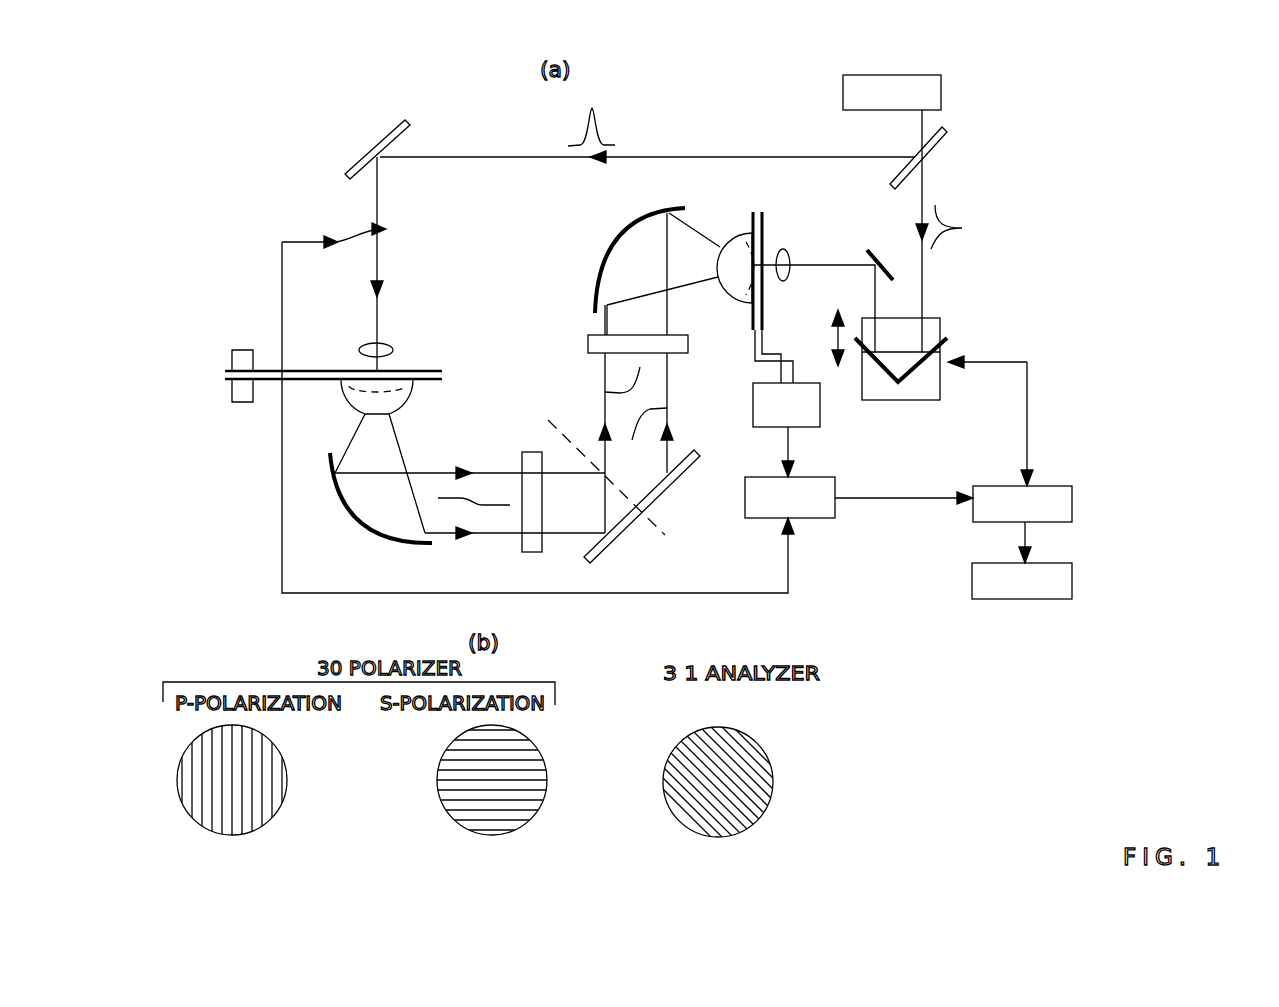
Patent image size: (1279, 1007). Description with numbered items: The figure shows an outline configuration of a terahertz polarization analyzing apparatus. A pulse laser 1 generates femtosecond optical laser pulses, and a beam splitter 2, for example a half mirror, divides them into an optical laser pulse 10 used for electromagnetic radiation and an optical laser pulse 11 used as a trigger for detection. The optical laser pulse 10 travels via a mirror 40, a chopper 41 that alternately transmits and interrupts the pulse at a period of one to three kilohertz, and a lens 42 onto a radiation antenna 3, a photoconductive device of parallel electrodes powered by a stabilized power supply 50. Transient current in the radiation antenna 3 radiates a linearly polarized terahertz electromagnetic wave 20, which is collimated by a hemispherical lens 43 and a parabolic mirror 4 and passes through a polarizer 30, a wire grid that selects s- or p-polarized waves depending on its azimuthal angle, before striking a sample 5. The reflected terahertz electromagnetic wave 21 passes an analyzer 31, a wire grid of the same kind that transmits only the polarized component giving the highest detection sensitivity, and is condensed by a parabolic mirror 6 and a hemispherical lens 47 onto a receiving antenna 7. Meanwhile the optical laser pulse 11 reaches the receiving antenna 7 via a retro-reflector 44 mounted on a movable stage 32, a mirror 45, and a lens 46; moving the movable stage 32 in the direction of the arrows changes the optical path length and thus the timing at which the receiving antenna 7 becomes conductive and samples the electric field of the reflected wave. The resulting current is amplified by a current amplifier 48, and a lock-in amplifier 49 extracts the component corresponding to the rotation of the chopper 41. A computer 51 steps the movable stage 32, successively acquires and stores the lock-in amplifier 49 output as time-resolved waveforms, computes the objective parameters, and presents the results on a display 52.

The pulse laser 1 is at (943, 93).
The beam splitter 2 is at (943, 150).
The radiation antenna 3 is at (425, 368).
The parabolic mirror 4 is at (357, 516).
The sample 5 is at (680, 482).
The parabolic mirror 6 is at (607, 268).
The receiving antenna 7 is at (764, 210).
The optical laser pulse 10 is at (600, 114).
The optical laser pulse 11 is at (965, 229).
The terahertz electromagnetic wave 20 is at (473, 531).
The reflected terahertz electromagnetic wave 21 is at (667, 407).
The polarizer 30 is at (520, 545).
The analyzer 31 is at (588, 343).
The movable stage 32 is at (897, 405).
The mirror 40 is at (355, 160).
The chopper 41 is at (385, 232).
The lens 42 is at (362, 343).
The hemispherical lens 43 is at (342, 397).
The retro-reflector 44 is at (922, 372).
The mirror 45 is at (868, 248).
The lens 46 is at (786, 250).
The hemispherical lens 47 is at (730, 237).
The current amplifier 48 is at (822, 412).
The lock-in amplifier 49 is at (815, 523).
The stabilized power supply 50 is at (226, 368).
The computer 51 is at (1073, 497).
The display 52 is at (1073, 577).